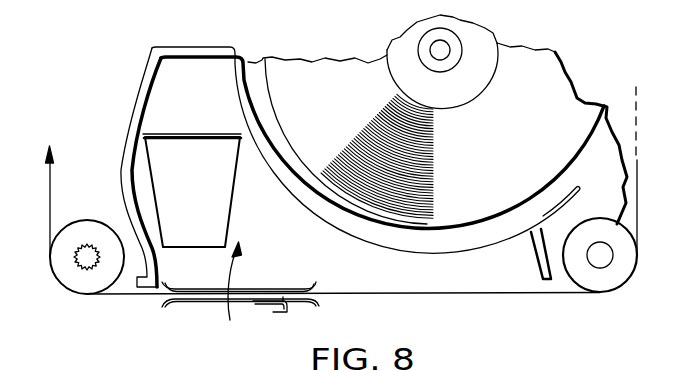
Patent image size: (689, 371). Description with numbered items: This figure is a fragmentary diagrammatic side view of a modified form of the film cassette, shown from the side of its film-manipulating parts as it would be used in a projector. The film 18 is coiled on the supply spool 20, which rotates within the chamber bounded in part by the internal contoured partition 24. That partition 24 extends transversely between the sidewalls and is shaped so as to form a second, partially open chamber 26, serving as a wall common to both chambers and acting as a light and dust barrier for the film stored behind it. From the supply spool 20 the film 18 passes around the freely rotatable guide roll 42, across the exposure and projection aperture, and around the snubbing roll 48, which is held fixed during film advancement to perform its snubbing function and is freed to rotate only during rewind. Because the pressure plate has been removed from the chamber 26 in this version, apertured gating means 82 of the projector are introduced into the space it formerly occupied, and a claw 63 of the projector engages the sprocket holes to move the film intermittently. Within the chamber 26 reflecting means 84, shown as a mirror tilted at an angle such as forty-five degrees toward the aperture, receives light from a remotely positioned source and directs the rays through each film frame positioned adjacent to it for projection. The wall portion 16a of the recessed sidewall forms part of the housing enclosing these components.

The wall portion 16a is at (275, 216).
The film 18 is at (508, 128).
The supply spool 20 is at (498, 66).
The partition 24 is at (306, 207).
The second partially open chamber 26 is at (234, 291).
The guide roll 42 is at (627, 252).
The snubbing roll 48 is at (67, 275).
The claw 63 is at (273, 312).
The apertured gating means 82 is at (201, 291).
The reflecting means 84 is at (201, 186).